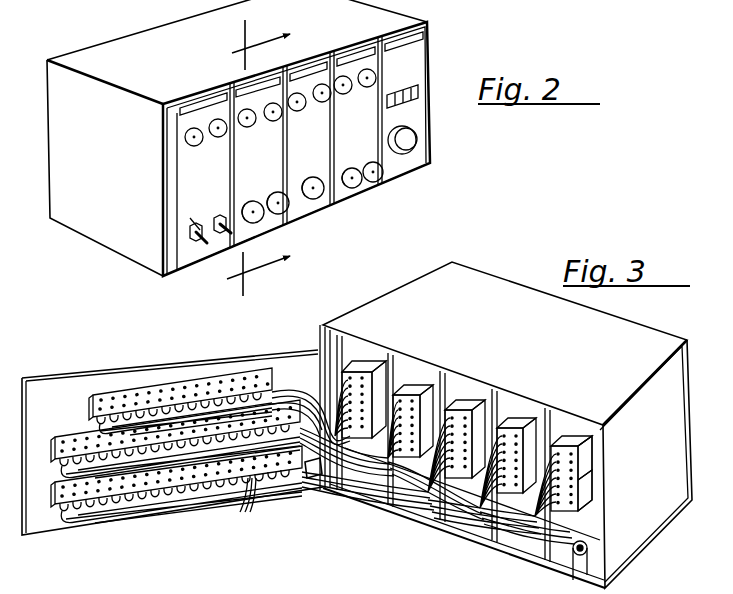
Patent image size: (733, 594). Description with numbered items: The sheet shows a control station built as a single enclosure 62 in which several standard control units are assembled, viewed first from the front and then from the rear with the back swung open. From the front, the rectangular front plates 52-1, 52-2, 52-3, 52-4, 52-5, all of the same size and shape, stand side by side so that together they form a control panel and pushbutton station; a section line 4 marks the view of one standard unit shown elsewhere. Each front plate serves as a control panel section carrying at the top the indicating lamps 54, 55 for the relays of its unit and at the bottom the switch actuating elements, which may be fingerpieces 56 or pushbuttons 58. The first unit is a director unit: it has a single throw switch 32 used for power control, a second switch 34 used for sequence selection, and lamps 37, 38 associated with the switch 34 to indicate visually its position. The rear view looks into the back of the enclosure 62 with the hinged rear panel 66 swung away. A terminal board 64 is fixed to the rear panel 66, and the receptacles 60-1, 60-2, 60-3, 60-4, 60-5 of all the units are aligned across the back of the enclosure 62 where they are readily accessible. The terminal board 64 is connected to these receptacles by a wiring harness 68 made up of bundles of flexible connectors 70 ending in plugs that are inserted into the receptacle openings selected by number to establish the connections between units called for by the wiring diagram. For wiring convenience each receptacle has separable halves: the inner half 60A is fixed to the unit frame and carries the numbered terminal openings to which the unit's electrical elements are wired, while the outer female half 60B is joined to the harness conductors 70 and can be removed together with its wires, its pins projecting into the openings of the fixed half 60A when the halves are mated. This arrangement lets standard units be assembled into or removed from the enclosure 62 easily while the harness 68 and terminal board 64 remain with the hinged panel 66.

In FIG. 2, the enclosure 62 is at (118, 43).
In FIG. 3, the enclosure 62 is at (615, 330).
In FIG. 2, the section line 4 is at (248, 158).
In FIG. 2, the front plate 52-1 is at (190, 252).
In FIG. 2, the front plate 52-2 is at (272, 218).
In FIG. 2, the front plate 52-3 is at (327, 200).
In FIG. 2, the front plate 52-4 is at (370, 188).
In FIG. 2, the front plate 52-5 is at (427, 148).
In FIG. 2, the lamp 37 is at (183, 140).
In FIG. 2, the lamp 38 is at (214, 138).
In FIG. 2, the indicating lamp 54 is at (286, 118).
In FIG. 2, the indicating lamp 55 is at (320, 115).
In FIG. 2, the fingerpiece 56 is at (190, 218).
In FIG. 2, the single throw switch 32 is at (184, 233).
In FIG. 2, the second switch 34 is at (217, 214).
In FIG. 2, the pushbutton 58 is at (255, 200).
In FIG. 3, the rear panel 66 is at (103, 378).
In FIG. 3, the terminal board 64 is at (53, 512).
In FIG. 3, the flexible connectors 70 is at (242, 507).
In FIG. 3, the wiring harness 68 is at (313, 482).
In FIG. 3, the receptacle 60-5 is at (373, 360).
In FIG. 3, the receptacle 60-4 is at (423, 378).
In FIG. 3, the receptacle 60-3 is at (474, 398).
In FIG. 3, the receptacle 60-2 is at (524, 415).
In FIG. 3, the receptacle 60-1 is at (583, 430).
In FIG. 3, the receptacle half 60A is at (592, 468).
In FIG. 3, the receptacle half 60B is at (584, 488).